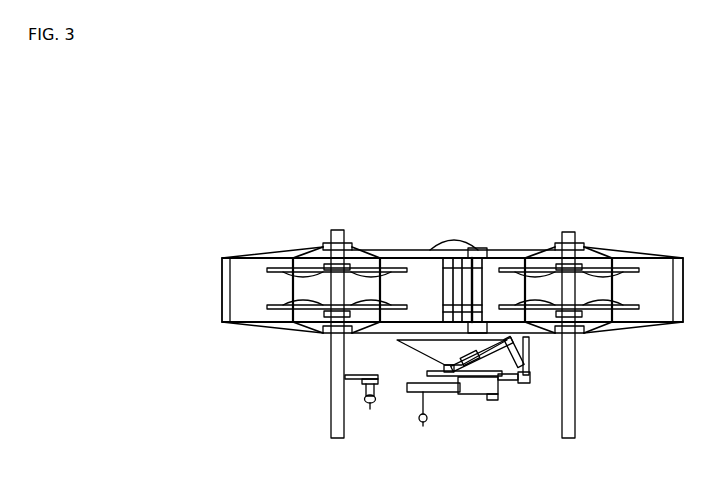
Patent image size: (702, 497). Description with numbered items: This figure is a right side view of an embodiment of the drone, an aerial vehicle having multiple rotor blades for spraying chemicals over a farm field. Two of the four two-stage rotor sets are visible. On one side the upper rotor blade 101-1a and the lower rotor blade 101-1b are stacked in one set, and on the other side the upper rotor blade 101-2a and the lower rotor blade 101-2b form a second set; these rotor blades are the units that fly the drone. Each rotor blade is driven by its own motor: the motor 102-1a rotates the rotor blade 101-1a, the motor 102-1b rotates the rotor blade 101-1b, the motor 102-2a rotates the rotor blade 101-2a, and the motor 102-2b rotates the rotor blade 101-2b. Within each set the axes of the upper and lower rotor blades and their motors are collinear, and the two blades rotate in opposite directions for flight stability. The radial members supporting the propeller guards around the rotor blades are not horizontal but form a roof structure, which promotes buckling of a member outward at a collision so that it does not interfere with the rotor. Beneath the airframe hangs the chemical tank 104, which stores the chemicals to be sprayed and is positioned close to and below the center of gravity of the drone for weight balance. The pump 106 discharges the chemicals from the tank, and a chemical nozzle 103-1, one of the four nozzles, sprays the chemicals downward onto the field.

The rotor blade 101-1a is at (625, 266).
The rotor blade 101-1b is at (622, 323).
The rotor blade 101-2a is at (270, 266).
The rotor blade 101-2b is at (278, 323).
The motor 102-1a is at (556, 265).
The motor 102-1b is at (582, 311).
The motor 102-2a is at (352, 265).
The motor 102-2b is at (322, 311).
The chemical nozzle 103-1 is at (370, 410).
The chemical tank 104 is at (418, 362).
The pump 106 is at (473, 395).